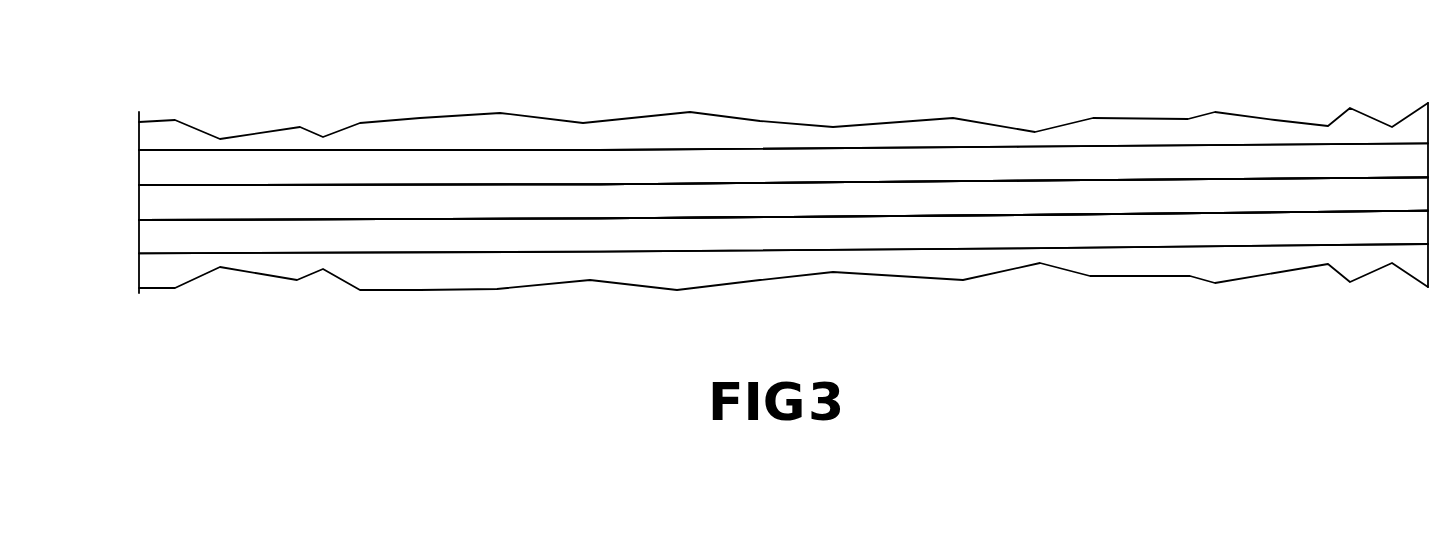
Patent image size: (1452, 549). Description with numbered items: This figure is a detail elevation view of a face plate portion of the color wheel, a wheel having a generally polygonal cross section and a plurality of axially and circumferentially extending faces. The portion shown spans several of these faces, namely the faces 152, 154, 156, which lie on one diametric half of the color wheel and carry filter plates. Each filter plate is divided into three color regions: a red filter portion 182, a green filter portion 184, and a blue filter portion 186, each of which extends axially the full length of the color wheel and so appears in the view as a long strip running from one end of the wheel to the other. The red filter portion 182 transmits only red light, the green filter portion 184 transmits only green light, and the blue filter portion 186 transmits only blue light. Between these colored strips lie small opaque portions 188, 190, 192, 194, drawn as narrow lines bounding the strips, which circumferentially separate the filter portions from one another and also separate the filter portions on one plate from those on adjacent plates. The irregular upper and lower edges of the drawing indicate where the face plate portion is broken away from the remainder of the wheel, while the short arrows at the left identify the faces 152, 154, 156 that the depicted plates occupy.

The face 152 is at (136, 140).
The face 154 is at (124, 230).
The face 156 is at (132, 267).
The red filter portion 182 is at (246, 165).
The green filter portion 184 is at (298, 202).
The blue filter portion 186 is at (471, 237).
The opaque portion 188 is at (753, 147).
The opaque portion 190 is at (915, 180).
The opaque portion 192 is at (1128, 212).
The opaque portion 194 is at (1260, 245).